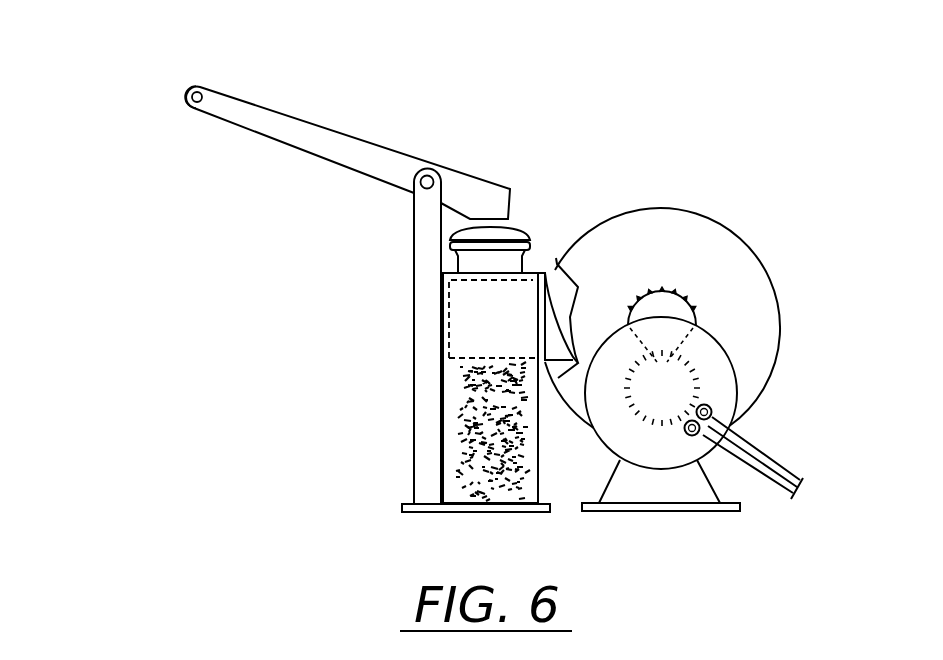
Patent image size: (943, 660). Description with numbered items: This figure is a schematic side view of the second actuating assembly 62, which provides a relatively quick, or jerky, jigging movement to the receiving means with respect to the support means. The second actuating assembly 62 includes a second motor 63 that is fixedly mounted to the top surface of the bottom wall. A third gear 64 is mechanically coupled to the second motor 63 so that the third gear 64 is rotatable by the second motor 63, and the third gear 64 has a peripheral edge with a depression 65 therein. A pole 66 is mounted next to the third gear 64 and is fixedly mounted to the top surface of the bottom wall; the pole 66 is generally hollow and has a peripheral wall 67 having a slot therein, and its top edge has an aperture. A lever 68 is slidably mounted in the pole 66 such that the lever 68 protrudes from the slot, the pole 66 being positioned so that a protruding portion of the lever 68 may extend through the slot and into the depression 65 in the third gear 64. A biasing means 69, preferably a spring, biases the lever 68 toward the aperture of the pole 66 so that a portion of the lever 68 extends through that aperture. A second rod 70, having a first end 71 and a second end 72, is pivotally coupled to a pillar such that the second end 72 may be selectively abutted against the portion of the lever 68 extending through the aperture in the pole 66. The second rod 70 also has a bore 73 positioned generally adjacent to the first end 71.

The second actuating assembly 62 is at (246, 298).
The second motor 63 is at (688, 472).
The third gear 64 is at (748, 243).
The depression 65 is at (556, 258).
The pole 66 is at (443, 477).
The peripheral wall 67 is at (540, 470).
The lever 68 is at (545, 272).
The biasing means 69 is at (473, 425).
The second rod 70 is at (338, 130).
The first end 71 is at (197, 85).
The second end 72 is at (512, 214).
The bore 73 is at (188, 105).